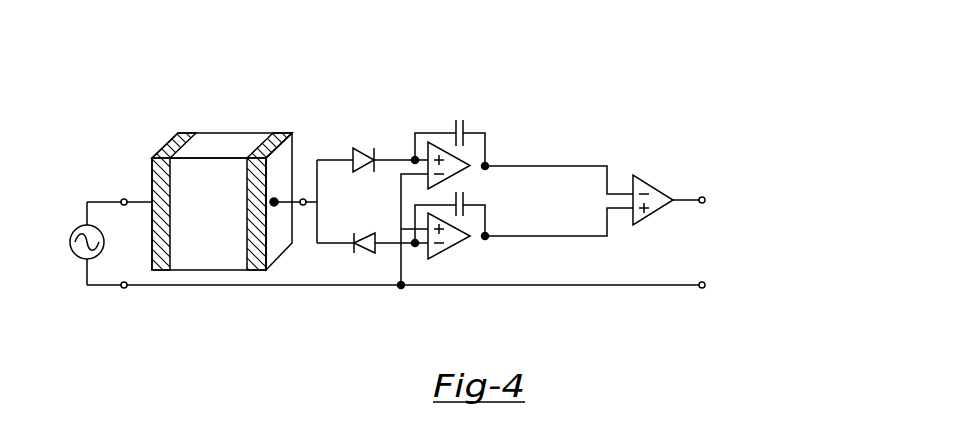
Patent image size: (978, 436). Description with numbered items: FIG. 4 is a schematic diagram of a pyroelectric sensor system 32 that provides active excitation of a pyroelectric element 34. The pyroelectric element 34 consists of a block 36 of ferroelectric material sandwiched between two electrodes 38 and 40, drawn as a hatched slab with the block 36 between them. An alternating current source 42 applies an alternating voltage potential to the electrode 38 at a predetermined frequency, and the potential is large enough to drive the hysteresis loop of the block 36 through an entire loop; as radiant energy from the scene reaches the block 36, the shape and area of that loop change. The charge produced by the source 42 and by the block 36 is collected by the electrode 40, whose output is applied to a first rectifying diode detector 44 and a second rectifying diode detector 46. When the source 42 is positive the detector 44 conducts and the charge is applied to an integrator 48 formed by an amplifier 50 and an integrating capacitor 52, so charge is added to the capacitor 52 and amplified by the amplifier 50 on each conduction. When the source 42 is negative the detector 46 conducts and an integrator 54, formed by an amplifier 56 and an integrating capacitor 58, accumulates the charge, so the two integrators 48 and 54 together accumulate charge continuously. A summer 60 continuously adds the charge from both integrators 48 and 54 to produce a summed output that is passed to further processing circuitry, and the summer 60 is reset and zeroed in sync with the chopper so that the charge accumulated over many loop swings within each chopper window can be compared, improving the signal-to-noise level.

The pyroelectric sensor system 32 is at (578, 116).
The pyroelectric element 34 is at (246, 118).
The block of ferroelectric material 36 is at (217, 143).
The electrode 38 is at (168, 150).
The electrode 40 is at (277, 135).
The alternating current source 42 is at (70, 240).
The first rectifying diode detector 44 is at (368, 148).
The second rectifying diode detector 46 is at (359, 253).
The integrator 48 is at (481, 110).
The amplifier 50 is at (455, 185).
The integrating capacitor 52 is at (455, 120).
The integrator 54 is at (477, 261).
The amplifier 56 is at (452, 248).
The integrating capacitor 58 is at (472, 207).
The summer 60 is at (655, 183).